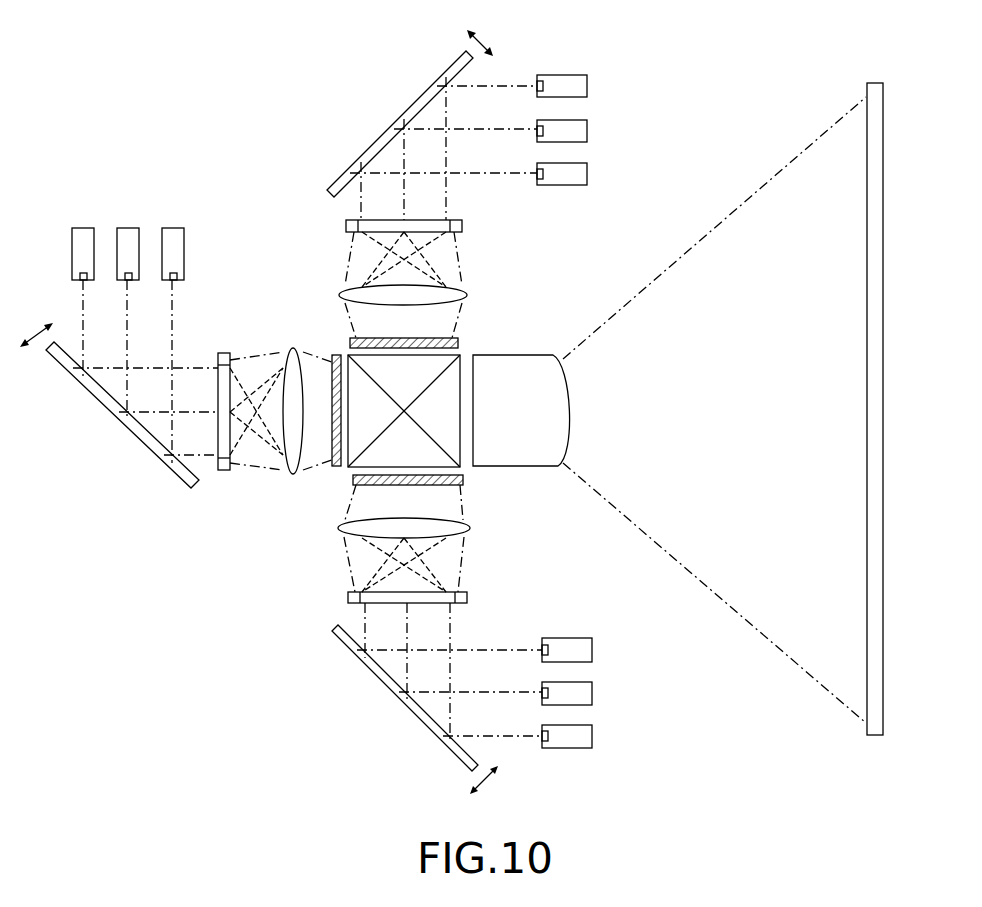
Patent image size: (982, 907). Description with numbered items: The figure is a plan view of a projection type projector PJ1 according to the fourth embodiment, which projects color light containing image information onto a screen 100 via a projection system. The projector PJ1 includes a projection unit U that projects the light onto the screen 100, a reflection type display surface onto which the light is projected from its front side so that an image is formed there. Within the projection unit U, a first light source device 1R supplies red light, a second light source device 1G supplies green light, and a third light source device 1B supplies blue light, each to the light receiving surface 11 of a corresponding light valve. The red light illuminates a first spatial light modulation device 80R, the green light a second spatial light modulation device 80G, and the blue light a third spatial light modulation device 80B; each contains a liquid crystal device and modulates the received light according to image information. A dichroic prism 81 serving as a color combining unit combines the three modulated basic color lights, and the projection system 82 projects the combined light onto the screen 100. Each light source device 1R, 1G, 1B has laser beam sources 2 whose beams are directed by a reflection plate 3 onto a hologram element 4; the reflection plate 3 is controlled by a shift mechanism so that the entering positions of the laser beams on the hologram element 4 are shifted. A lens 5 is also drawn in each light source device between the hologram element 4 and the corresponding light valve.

The projection type projector PJ1 is at (115, 135).
The projection unit U is at (630, 250).
The third light source device 1B is at (498, 244).
The second light source device 1G is at (254, 525).
The first light source device 1R is at (513, 588).
The laser beam source 2 is at (588, 84).
The reflection plate 3 is at (328, 194).
The hologram element 4 is at (463, 227).
The condenser lens 5 is at (468, 291).
The light receiving surface 11 is at (333, 366).
The third spatial light modulation device 80B is at (352, 341).
The second spatial light modulation device 80G is at (336, 468).
The first spatial light modulation device 80R is at (465, 481).
The dichroic prism 81 is at (461, 358).
The projection system 82 is at (534, 370).
The screen 100 is at (867, 198).